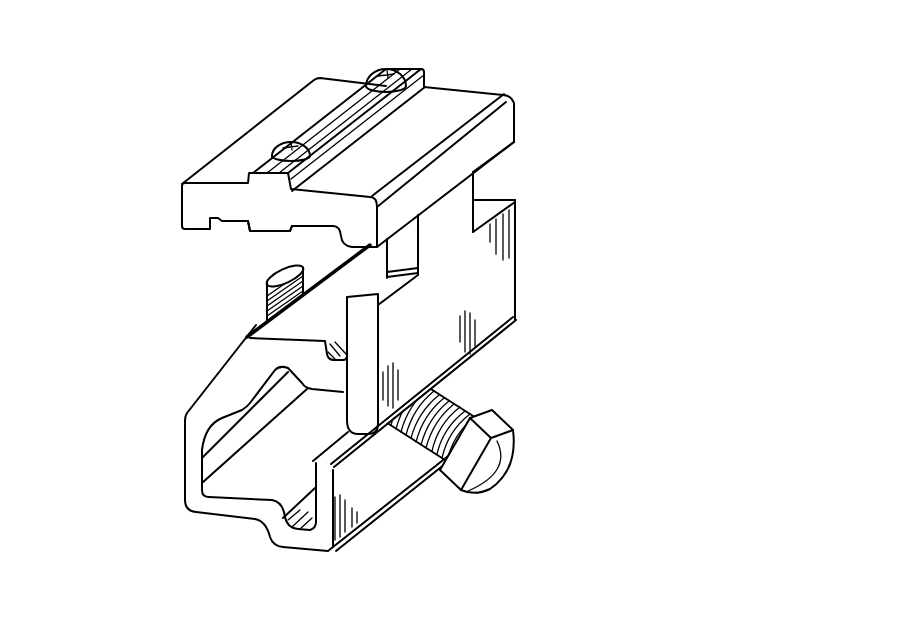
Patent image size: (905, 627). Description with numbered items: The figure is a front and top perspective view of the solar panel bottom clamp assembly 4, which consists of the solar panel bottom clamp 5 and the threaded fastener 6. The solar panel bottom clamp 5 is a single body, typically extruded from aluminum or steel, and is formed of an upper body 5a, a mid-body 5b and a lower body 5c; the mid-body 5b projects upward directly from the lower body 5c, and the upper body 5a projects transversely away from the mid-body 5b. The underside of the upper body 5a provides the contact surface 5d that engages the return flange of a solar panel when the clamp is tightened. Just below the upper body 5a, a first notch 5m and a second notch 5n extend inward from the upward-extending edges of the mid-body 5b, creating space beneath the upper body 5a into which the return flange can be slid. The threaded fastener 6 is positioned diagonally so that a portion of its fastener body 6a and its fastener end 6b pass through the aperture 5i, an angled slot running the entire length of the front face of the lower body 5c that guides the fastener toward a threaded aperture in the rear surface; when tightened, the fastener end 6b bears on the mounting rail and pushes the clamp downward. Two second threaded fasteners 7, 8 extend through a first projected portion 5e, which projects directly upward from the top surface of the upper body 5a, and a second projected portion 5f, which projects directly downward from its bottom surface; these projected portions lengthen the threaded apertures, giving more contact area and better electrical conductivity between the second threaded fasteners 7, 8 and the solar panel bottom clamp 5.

The solar panel bottom clamp assembly 4 is at (110, 296).
The solar panel bottom clamp 5 is at (517, 255).
The upper body 5a is at (481, 93).
The mid-body 5b is at (518, 293).
The lower body 5c is at (218, 370).
The contact surface 5d is at (188, 230).
The first projected portion 5e is at (333, 106).
The second projected portion 5f is at (258, 235).
The aperture 5i is at (337, 449).
The first notch 5m is at (477, 199).
The second notch 5n is at (403, 247).
The threaded fastener 6 is at (475, 413).
The fastener body 6a is at (431, 440).
The fastener end 6b is at (264, 303).
The second threaded fastener 7 is at (383, 67).
The second threaded fastener 8 is at (281, 143).